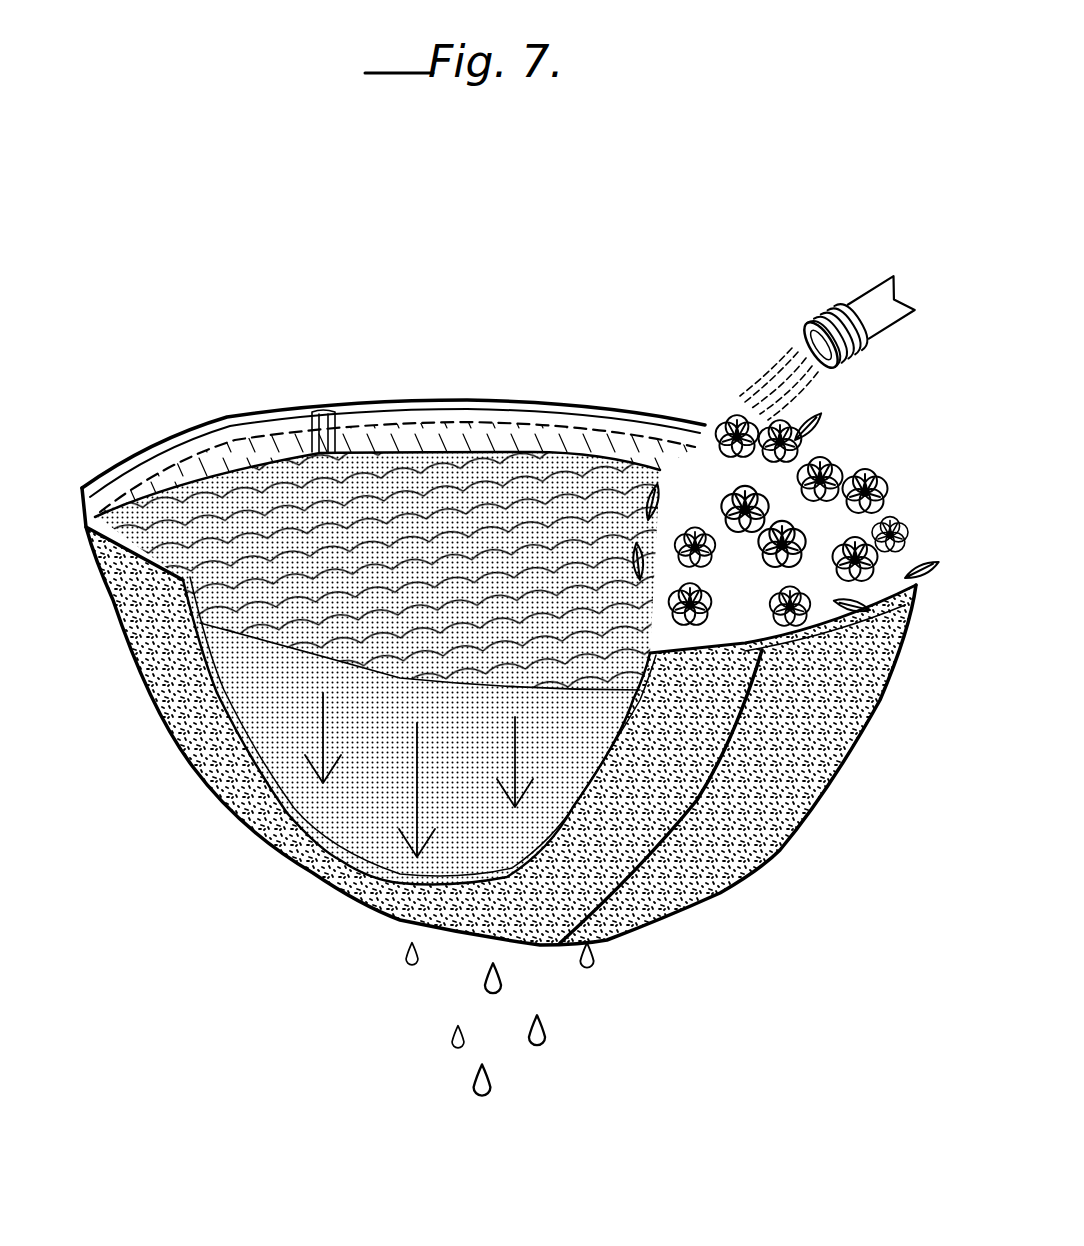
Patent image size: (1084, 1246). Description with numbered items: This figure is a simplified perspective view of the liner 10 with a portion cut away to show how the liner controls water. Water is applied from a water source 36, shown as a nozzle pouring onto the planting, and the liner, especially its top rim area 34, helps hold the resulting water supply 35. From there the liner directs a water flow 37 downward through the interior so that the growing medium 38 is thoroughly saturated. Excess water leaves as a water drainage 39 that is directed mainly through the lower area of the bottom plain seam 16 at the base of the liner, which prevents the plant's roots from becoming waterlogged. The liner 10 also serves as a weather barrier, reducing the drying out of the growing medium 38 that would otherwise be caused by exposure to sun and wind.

The liner 10 is at (803, 753).
The bottom plain seam 16 is at (697, 853).
The top rim area 34 is at (247, 423).
The water supply 35 is at (400, 458).
The water source 36 is at (878, 352).
The water flow 37 is at (327, 880).
The growing medium 38 is at (260, 713).
The water drainage 39 is at (548, 1044).